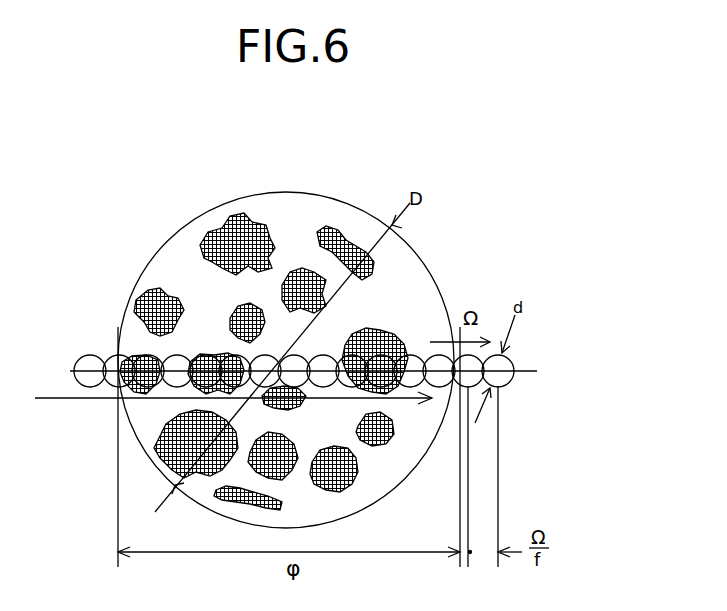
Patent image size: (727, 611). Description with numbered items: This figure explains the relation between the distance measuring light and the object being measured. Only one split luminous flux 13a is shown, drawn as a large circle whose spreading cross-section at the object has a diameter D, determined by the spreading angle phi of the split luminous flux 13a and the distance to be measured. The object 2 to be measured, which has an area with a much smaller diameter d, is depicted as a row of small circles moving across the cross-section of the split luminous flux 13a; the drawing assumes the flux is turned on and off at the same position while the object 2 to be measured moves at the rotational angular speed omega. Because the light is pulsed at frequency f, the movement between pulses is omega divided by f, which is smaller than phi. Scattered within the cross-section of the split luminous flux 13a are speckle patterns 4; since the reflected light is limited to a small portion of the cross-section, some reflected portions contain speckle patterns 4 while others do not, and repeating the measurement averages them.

The speckle pattern 4 is at (246, 213).
The split luminous flux 13a is at (312, 194).
The object to be measured 2 is at (513, 358).